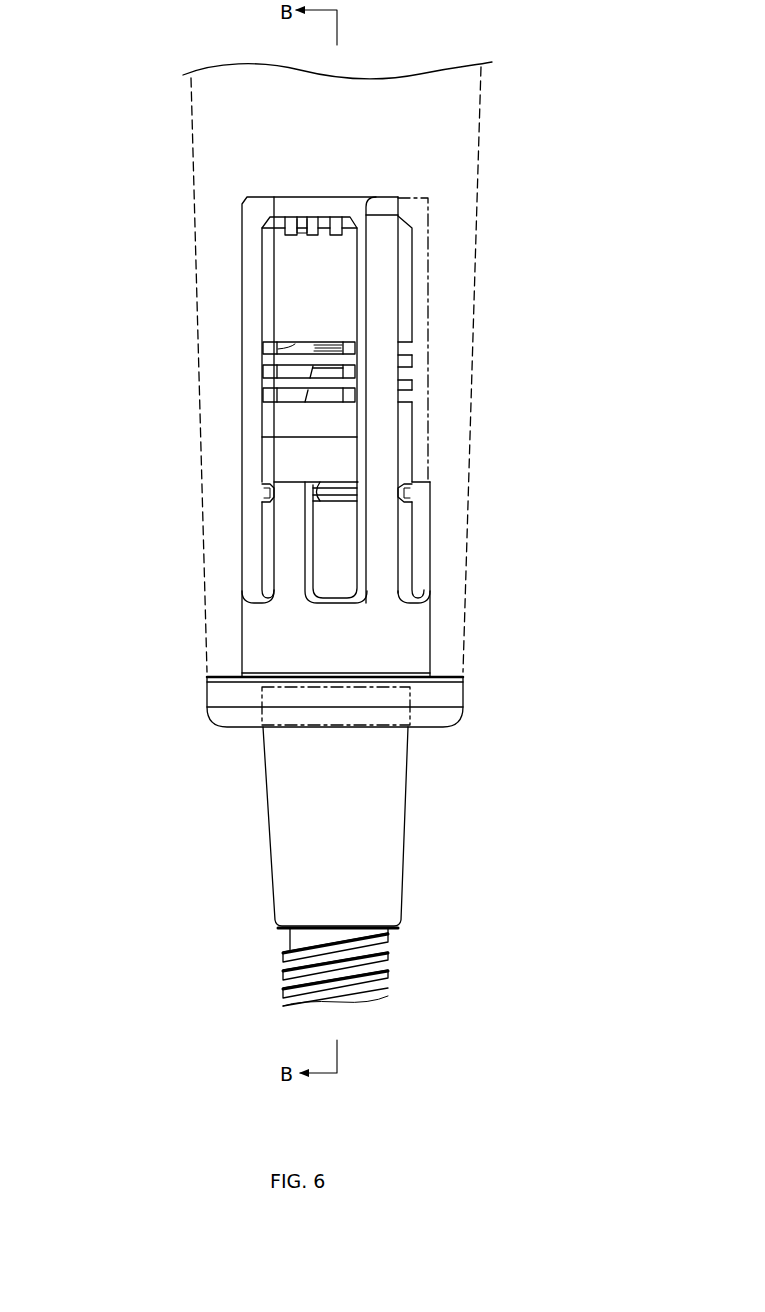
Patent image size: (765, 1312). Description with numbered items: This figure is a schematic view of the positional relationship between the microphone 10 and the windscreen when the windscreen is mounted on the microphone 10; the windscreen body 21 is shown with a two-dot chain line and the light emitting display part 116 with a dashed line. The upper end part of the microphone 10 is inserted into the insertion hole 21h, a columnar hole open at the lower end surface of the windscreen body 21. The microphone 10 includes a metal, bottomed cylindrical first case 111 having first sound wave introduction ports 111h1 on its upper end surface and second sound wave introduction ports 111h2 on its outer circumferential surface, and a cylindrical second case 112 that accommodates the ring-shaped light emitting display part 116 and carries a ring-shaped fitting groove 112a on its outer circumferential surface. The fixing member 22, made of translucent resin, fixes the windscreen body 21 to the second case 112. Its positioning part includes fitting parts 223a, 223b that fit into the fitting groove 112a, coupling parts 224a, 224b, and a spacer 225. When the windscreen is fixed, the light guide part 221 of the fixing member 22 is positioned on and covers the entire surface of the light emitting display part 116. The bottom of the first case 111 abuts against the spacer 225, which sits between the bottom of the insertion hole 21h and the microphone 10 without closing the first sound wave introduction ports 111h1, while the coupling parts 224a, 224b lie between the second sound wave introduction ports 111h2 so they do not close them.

The microphone 10 is at (405, 807).
The windscreen body 21 is at (481, 189).
The insertion hole 21h is at (428, 337).
The fixing member 22 is at (433, 628).
The first case 111 is at (412, 285).
The first sound wave introduction ports 111h1 is at (292, 222).
The second sound wave introduction ports 111h2 is at (263, 349).
The second case 112 is at (412, 465).
The fitting groove 112a is at (263, 494).
The light emitting display part 116 is at (262, 716).
The light guide part 221 is at (465, 692).
The fitting part 223a is at (432, 518).
The fitting part 223b is at (262, 525).
The coupling part 224a is at (357, 308).
The coupling part 224b is at (243, 427).
The spacer 225 is at (318, 205).